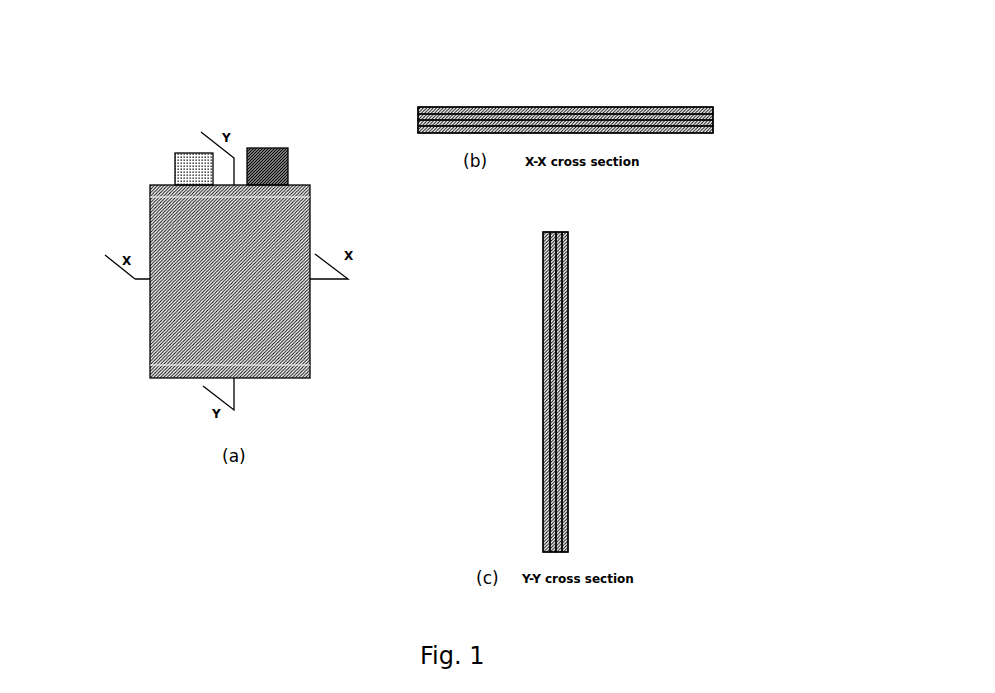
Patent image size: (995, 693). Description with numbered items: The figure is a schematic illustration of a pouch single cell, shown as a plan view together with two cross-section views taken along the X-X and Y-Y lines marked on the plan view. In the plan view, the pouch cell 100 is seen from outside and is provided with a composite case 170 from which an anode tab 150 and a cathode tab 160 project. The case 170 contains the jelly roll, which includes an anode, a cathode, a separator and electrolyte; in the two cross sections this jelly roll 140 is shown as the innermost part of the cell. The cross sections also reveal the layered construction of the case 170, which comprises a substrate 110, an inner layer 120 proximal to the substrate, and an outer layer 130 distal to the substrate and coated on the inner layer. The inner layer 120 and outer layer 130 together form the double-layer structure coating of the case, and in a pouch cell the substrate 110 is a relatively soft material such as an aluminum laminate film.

The pouch cell 100 is at (150, 61).
The substrate 110 is at (717, 105).
The inner layer 120 is at (713, 124).
The outer layer 130 is at (698, 130).
The jelly roll 140 is at (678, 130).
The anode tab 150 is at (188, 158).
The cathode tab 160 is at (285, 162).
The composite case 170 is at (148, 212).